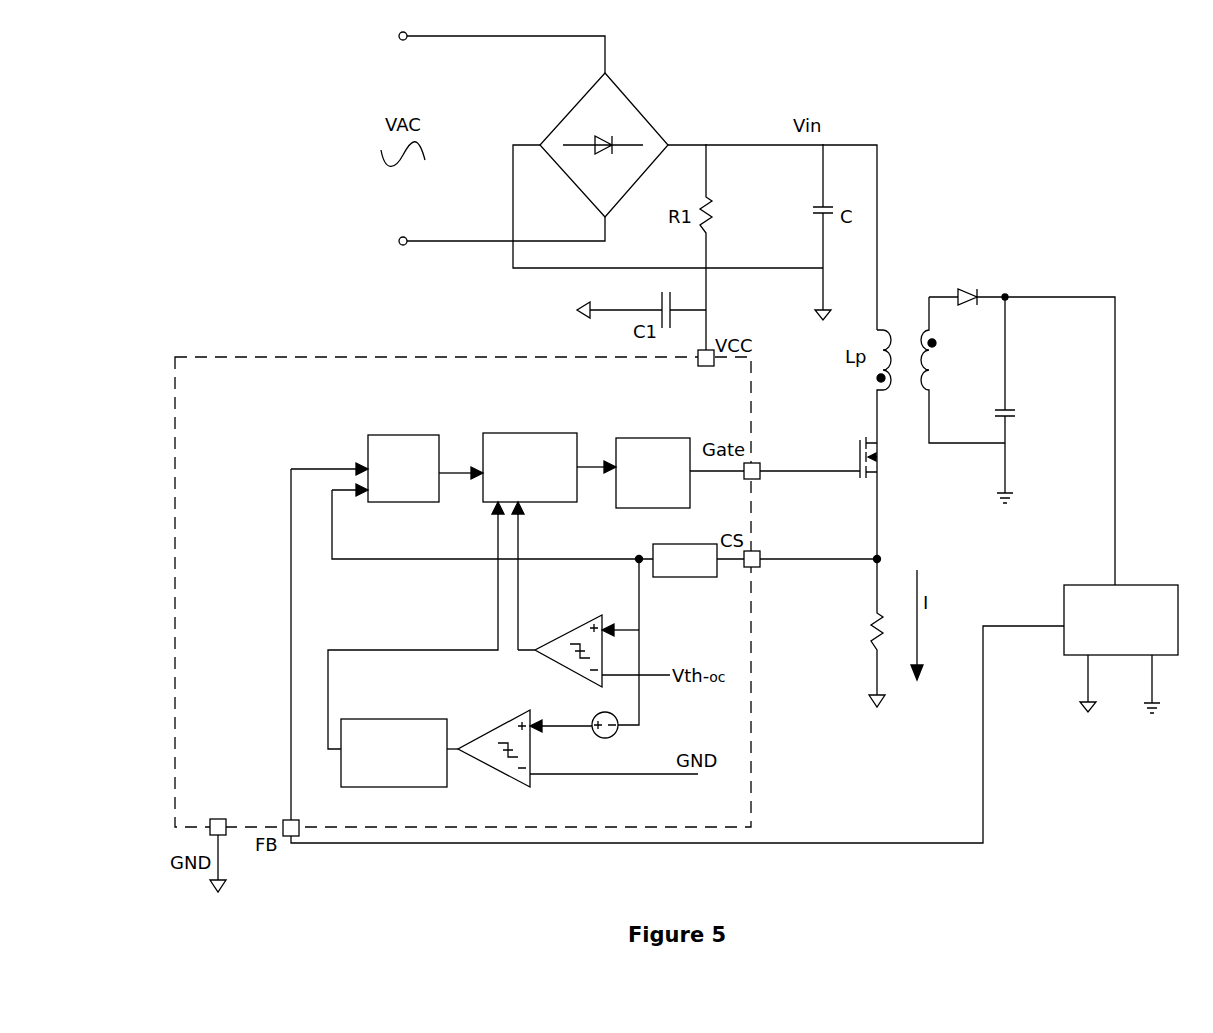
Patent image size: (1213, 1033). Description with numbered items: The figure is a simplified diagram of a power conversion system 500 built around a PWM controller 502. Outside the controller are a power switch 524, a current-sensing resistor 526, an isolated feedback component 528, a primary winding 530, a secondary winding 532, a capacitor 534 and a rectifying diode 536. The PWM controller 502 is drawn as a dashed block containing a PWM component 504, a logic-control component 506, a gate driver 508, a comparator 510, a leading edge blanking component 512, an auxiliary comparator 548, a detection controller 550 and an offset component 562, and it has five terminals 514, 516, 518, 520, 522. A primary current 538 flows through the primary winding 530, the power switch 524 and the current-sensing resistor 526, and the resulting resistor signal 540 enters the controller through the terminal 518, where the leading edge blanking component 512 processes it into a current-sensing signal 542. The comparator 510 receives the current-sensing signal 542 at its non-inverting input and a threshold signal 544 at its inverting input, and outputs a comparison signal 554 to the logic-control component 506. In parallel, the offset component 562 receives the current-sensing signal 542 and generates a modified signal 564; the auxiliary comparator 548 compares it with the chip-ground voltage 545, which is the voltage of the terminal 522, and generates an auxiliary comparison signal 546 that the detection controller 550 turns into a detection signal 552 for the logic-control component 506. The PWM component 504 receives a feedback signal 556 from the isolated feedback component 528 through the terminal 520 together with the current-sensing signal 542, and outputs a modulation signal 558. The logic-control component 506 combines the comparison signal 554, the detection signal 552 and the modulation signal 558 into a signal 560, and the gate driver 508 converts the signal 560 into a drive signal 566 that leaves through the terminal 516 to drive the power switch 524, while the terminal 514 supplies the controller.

The power conversion system 500 is at (278, 148).
The PWM controller 502 is at (177, 356).
The PWM component 504 is at (396, 435).
The logic-control component 506 is at (522, 433).
The gate driver 508 is at (672, 438).
The comparator 510 is at (592, 614).
The leading edge blanking (LEB) component 512 is at (685, 578).
The terminal 514 is at (700, 370).
The terminal 516 is at (762, 467).
The terminal 518 is at (758, 553).
The terminal 520 is at (289, 845).
The terminal 522 is at (222, 819).
The power switch 524 is at (880, 476).
The current-sensing resistor 526 is at (868, 647).
The isolated feedback component 528 is at (1145, 579).
The primary winding 530 is at (887, 333).
The secondary winding 532 is at (925, 397).
The capacitor 534 is at (1010, 410).
The rectifying diode 536 is at (970, 294).
The primary current 538 is at (878, 546).
The resistor signal 540 is at (762, 565).
The current-sensing signal 542 is at (639, 552).
The threshold signal 544 is at (650, 676).
The chip-ground voltage 545 is at (615, 776).
The auxiliary comparison signal 546 is at (457, 745).
The auxiliary comparator 548 is at (485, 778).
The detection controller 550 is at (418, 787).
The detection signal 552 is at (426, 650).
The comparison signal 554 is at (519, 548).
The feedback signal 556 is at (677, 754).
The modulation signal 558 is at (452, 472).
The signal 560 is at (586, 466).
The offset component 562 is at (618, 730).
The modified signal 564 is at (565, 726).
The drive signal 566 is at (716, 474).